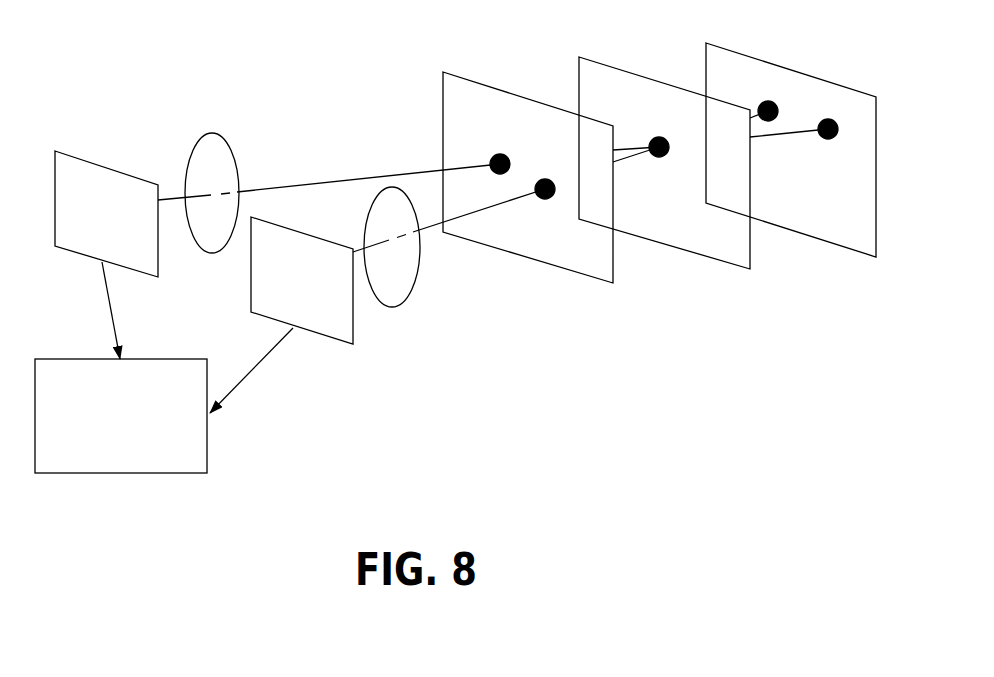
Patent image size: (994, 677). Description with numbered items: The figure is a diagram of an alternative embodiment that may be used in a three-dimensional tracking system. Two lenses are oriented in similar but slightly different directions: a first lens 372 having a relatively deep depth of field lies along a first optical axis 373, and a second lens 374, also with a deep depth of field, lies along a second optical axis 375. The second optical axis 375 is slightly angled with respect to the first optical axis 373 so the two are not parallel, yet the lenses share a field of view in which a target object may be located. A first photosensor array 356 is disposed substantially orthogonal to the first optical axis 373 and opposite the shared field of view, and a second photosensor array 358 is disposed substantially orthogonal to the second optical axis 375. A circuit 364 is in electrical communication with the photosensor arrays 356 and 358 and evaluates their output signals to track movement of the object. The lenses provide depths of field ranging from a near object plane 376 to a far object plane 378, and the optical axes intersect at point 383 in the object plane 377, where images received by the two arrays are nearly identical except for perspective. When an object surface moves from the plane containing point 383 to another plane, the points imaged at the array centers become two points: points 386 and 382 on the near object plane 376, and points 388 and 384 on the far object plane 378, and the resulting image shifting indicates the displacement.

The first photosensor array 356 is at (77, 222).
The second photosensor array 358 is at (288, 294).
The circuit 364 is at (150, 473).
The first lens 372 is at (236, 150).
The first optical axis 373 is at (410, 172).
The second lens 374 is at (415, 287).
The second optical axis 375 is at (450, 221).
The near object plane 376 is at (613, 268).
The object plane 377 is at (750, 250).
The far object plane 378 is at (822, 204).
The point on near object plane 382 is at (556, 193).
The intersection point 383 is at (667, 151).
The point on far object plane 384 is at (838, 135).
The point on near object plane 386 is at (504, 152).
The point on far object plane 388 is at (768, 98).